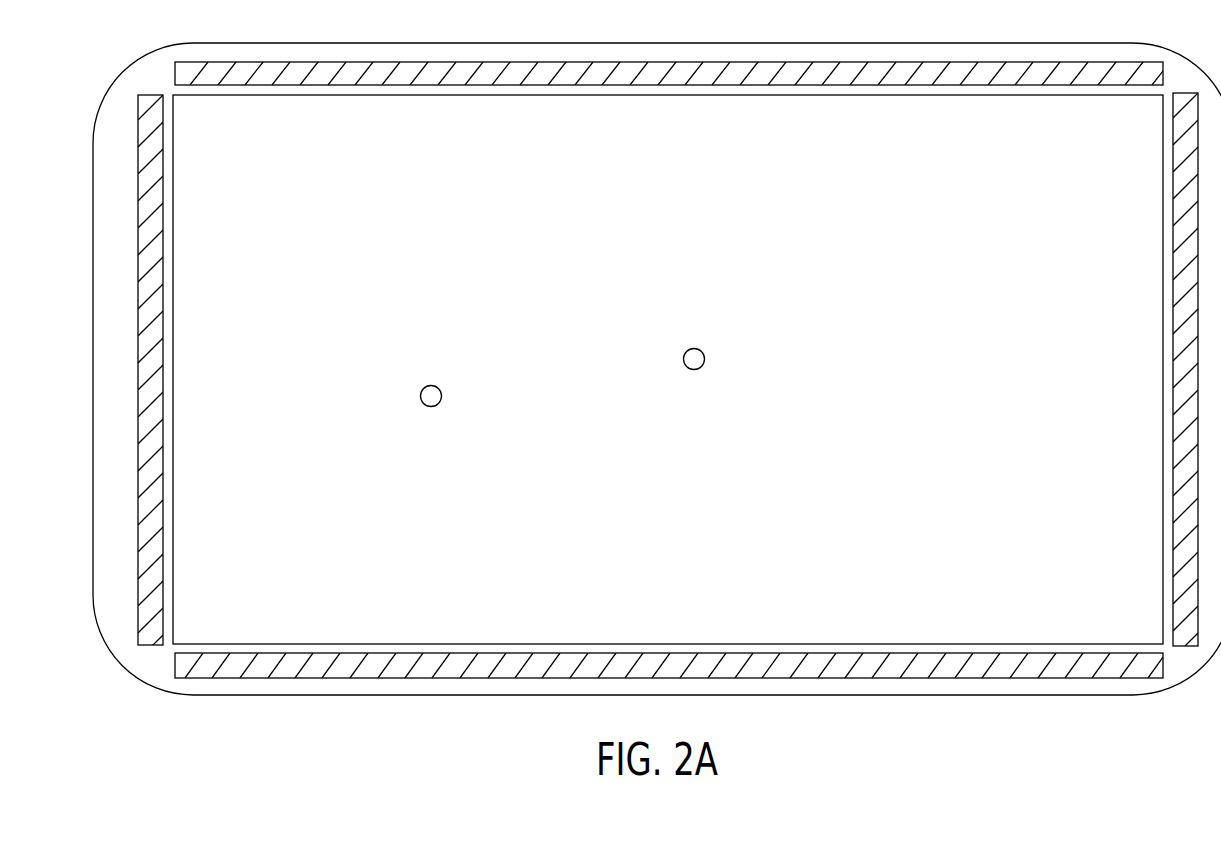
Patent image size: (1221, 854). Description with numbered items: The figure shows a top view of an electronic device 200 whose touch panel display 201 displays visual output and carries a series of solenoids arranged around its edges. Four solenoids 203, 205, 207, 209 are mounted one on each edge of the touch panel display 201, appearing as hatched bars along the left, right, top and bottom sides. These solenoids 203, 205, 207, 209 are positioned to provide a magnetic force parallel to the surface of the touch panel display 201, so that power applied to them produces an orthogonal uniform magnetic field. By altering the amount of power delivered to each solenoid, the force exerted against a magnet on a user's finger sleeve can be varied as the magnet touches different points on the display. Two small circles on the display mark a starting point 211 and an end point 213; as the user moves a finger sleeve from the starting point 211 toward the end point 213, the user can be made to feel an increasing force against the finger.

The electronic device 200 is at (910, 693).
The touch panel display 201 is at (400, 633).
The solenoid 203 is at (152, 647).
The solenoid 205 is at (1183, 647).
The solenoid 207 is at (175, 73).
The solenoid 209 is at (1017, 678).
The starting point 211 is at (692, 348).
The end point 213 is at (430, 385).